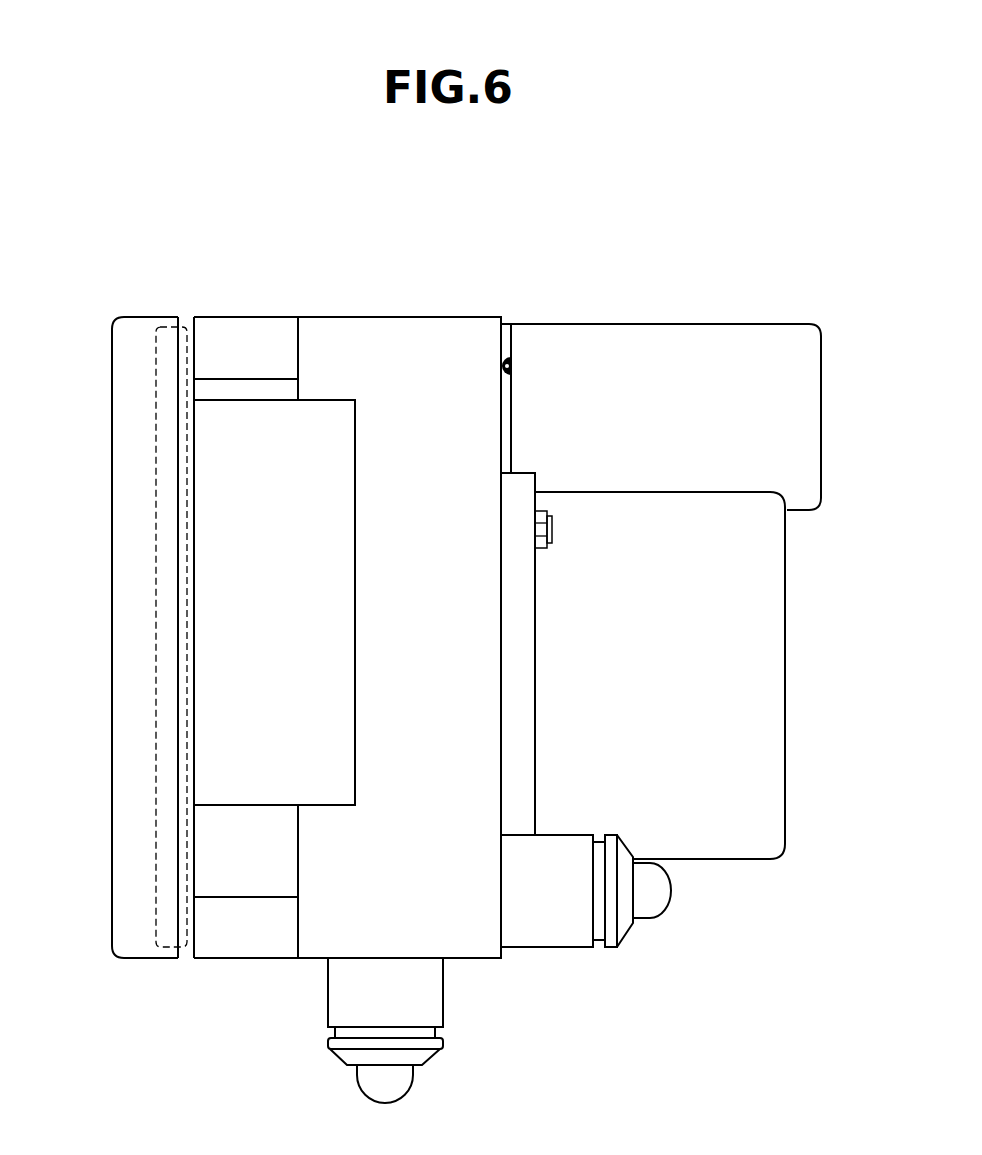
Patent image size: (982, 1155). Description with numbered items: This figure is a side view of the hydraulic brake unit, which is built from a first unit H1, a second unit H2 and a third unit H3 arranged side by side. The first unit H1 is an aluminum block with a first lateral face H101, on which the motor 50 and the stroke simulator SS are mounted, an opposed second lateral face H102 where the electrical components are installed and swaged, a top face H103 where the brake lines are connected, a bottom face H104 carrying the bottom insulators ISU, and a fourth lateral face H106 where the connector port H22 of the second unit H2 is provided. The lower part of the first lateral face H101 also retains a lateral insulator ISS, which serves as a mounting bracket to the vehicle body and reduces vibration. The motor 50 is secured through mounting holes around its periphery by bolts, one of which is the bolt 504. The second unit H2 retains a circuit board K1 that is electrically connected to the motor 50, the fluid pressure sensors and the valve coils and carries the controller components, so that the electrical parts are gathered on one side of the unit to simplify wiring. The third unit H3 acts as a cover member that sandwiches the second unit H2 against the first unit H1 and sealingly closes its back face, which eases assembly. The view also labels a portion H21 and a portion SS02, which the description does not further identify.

The third unit H3 is at (122, 313).
The circuit board K1 is at (167, 327).
The second unit H2 is at (232, 310).
The top face H103 is at (342, 317).
The first unit H1 is at (489, 311).
The stroke simulator SS is at (738, 324).
The substrate fastening portion SS02 is at (519, 366).
The first lateral face H101 is at (503, 432).
The bolt 504 is at (552, 528).
The connector port H22 is at (225, 703).
The fourth lateral face H106 is at (435, 740).
The motor 50 is at (788, 770).
The second lateral face H102 is at (297, 932).
The cover plate H21 is at (186, 960).
The bottom face H104 is at (490, 960).
The lateral insulator ISS is at (620, 942).
The bottom insulators ISU is at (440, 1050).